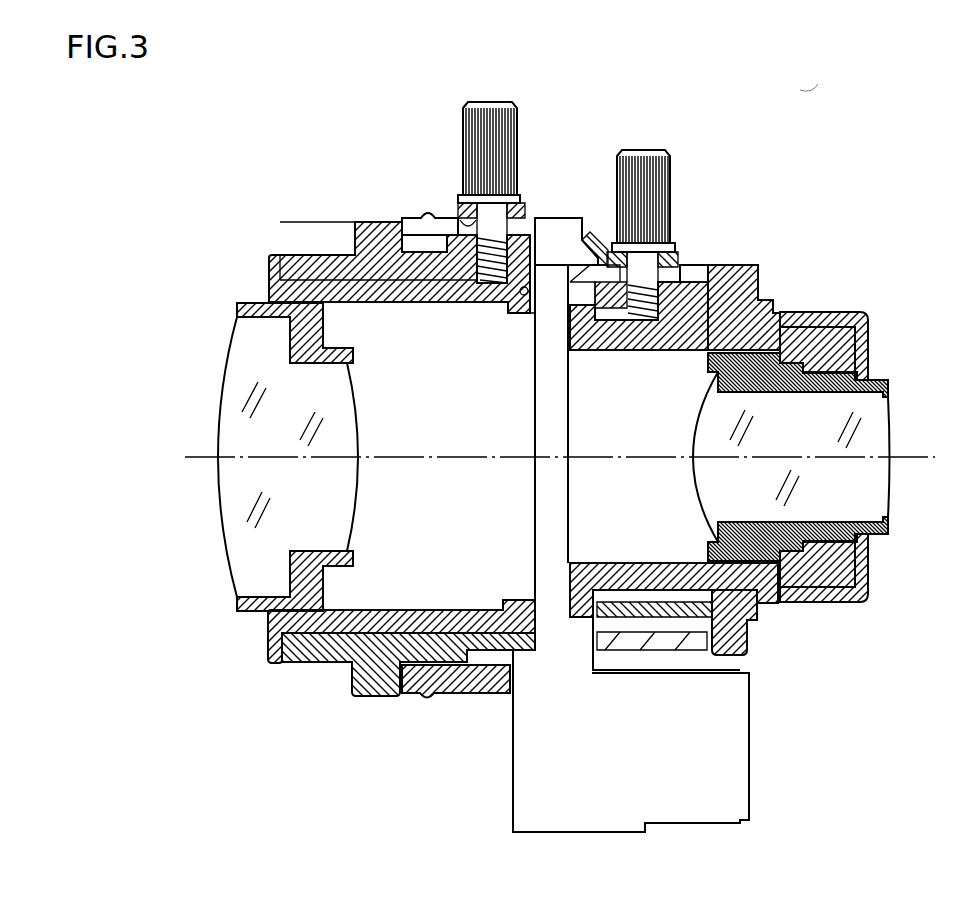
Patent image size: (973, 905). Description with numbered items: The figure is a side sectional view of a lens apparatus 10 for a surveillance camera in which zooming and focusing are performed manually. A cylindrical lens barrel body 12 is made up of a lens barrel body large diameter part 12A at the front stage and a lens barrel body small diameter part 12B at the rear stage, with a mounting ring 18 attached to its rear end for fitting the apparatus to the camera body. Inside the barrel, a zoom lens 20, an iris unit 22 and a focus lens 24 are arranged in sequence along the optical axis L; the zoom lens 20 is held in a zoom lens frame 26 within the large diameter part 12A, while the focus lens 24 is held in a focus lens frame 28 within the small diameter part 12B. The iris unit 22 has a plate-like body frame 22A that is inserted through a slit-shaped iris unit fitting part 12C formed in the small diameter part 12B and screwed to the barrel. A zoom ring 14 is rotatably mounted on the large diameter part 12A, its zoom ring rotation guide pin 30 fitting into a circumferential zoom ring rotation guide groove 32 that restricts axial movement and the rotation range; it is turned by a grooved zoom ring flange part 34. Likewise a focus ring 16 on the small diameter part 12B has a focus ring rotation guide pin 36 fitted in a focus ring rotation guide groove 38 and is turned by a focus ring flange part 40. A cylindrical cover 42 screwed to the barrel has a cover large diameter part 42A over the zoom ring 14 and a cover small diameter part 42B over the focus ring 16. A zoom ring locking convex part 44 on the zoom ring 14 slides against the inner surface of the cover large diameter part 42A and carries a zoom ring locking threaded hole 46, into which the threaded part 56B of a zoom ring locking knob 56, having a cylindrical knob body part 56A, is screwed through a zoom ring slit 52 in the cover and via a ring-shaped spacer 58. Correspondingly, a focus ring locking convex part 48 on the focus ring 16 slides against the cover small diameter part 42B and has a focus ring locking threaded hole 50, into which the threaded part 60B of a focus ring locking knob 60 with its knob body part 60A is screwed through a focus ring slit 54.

The lens apparatus for a surveillance camera 10 is at (806, 96).
The lens barrel body 12 is at (486, 413).
The lens barrel body large diameter part 12A is at (313, 628).
The lens barrel body small diameter part 12B is at (623, 592).
The iris unit fitting part 12C is at (565, 565).
The zoom ring 14 is at (325, 254).
The focus ring 16 is at (662, 612).
The mounting ring 18 is at (843, 602).
The zoom lens 20 is at (240, 546).
The iris unit 22 is at (577, 554).
The body frame 22A is at (536, 470).
The focus lens 24 is at (870, 495).
The zoom lens frame 26 is at (250, 612).
The focus lens frame 28 is at (797, 557).
The zoom ring rotation guide pin 30 is at (518, 296).
The zoom ring rotation guide groove 32 is at (522, 297).
The zoom ring flange part 34 is at (380, 692).
The focus ring rotation guide pin 36 is at (816, 340).
The focus ring rotation guide groove 38 is at (710, 354).
The focus ring flange part 40 is at (736, 650).
The cover 42 is at (444, 703).
The cover large diameter part 42A is at (425, 218).
The cover small diameter part 42B is at (730, 265).
The zoom ring locking convex part 44 is at (382, 290).
The zoom ring locking threaded hole 46 is at (442, 288).
The focus ring locking convex part 48 is at (600, 350).
The focus ring locking threaded hole 50 is at (650, 322).
The zoom ring slit 52 is at (462, 212).
The focus ring slit 54 is at (690, 270).
The zoom ring locking knob 56 is at (486, 365).
The knob body part 56A is at (514, 130).
The threaded part 56B is at (488, 278).
The spacer 58 is at (527, 213).
The focus ring locking knob 60 is at (486, 385).
The knob body part 60A is at (668, 180).
The threaded part 60B is at (640, 312).
The optical axis L is at (900, 452).